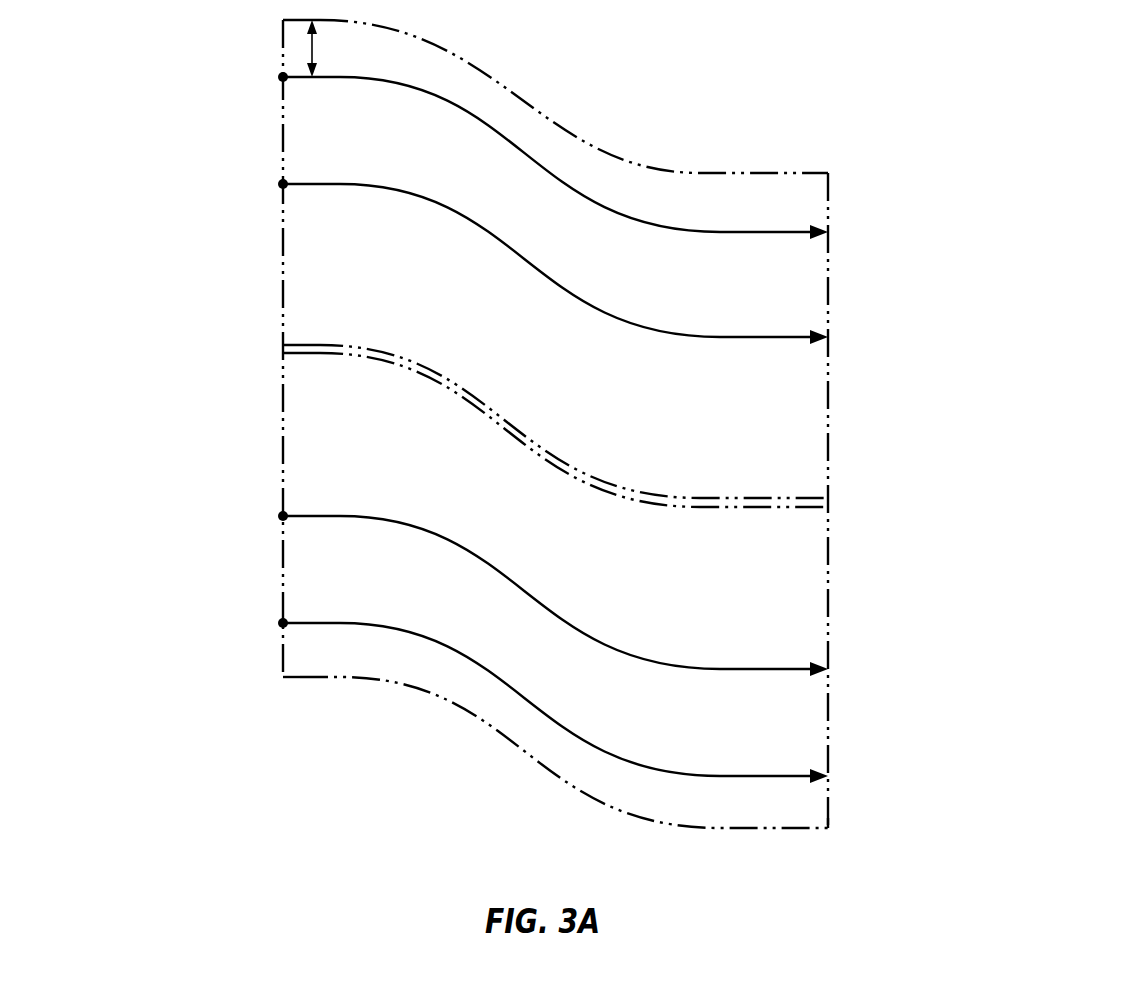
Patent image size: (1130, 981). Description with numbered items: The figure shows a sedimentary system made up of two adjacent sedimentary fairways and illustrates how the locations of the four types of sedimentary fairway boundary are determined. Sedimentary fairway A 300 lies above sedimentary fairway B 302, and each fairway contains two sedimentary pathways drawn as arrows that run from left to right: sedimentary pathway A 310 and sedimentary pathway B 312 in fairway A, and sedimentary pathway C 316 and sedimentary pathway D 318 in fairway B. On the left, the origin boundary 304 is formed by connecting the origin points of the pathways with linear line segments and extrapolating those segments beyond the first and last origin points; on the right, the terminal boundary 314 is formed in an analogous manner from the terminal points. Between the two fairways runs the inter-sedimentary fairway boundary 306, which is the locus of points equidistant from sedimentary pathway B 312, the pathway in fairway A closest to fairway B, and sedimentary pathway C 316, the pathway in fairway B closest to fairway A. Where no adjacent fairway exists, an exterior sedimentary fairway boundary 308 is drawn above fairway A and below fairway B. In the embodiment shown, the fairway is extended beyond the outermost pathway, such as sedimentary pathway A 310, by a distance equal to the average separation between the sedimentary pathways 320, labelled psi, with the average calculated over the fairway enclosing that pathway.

The sedimentary fairway A 300 is at (313, 247).
The sedimentary fairway B 302 is at (313, 480).
The origin boundary 304 is at (283, 97).
The inter-sedimentary fairway boundary 306 is at (305, 354).
The exterior sedimentary fairway boundary 308 is at (623, 160).
The sedimentary pathway A 310 is at (788, 231).
The sedimentary pathway B 312 is at (788, 336).
The terminal boundary 314 is at (828, 432).
The sedimentary pathway C 316 is at (788, 668).
The sedimentary pathway D 318 is at (788, 775).
The average separation between the sedimentary pathways 320 is at (312, 52).